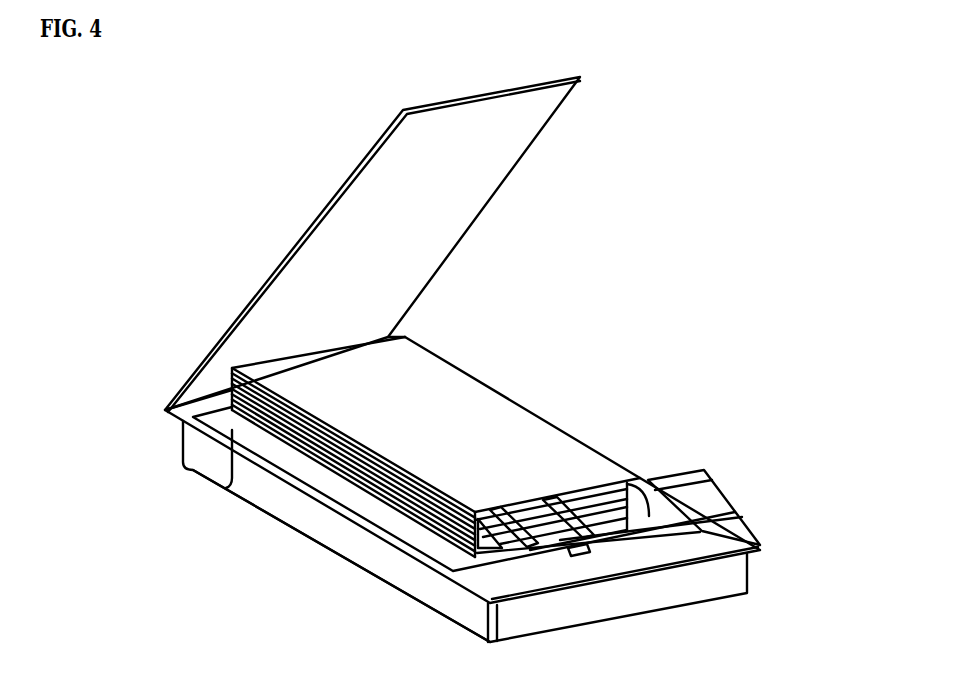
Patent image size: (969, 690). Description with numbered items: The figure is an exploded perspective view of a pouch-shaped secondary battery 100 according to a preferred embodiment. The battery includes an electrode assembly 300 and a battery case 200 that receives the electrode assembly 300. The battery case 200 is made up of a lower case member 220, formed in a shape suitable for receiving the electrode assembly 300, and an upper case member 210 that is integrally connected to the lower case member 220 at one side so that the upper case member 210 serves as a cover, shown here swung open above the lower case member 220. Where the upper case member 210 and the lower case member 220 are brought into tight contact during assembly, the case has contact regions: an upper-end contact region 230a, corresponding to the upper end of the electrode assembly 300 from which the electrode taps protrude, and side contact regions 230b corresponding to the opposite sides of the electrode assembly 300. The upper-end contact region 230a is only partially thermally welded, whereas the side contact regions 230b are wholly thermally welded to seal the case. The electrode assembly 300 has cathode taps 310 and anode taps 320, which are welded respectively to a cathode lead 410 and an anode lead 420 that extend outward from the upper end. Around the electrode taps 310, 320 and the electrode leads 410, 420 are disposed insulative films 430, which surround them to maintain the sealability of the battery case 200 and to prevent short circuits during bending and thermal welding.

The pouch-shaped secondary battery 100 is at (208, 193).
The battery case 200 is at (135, 372).
The upper case member 210 is at (243, 307).
The lower case member 220 is at (297, 533).
The upper-end contact region 230a is at (623, 567).
The side contact regions 230b is at (228, 487).
The electrode assembly 300 is at (546, 496).
The cathode taps 310 is at (437, 550).
The anode taps 320 is at (627, 483).
The cathode lead 410 is at (573, 557).
The anode lead 420 is at (753, 523).
The insulative films 430 is at (462, 560).